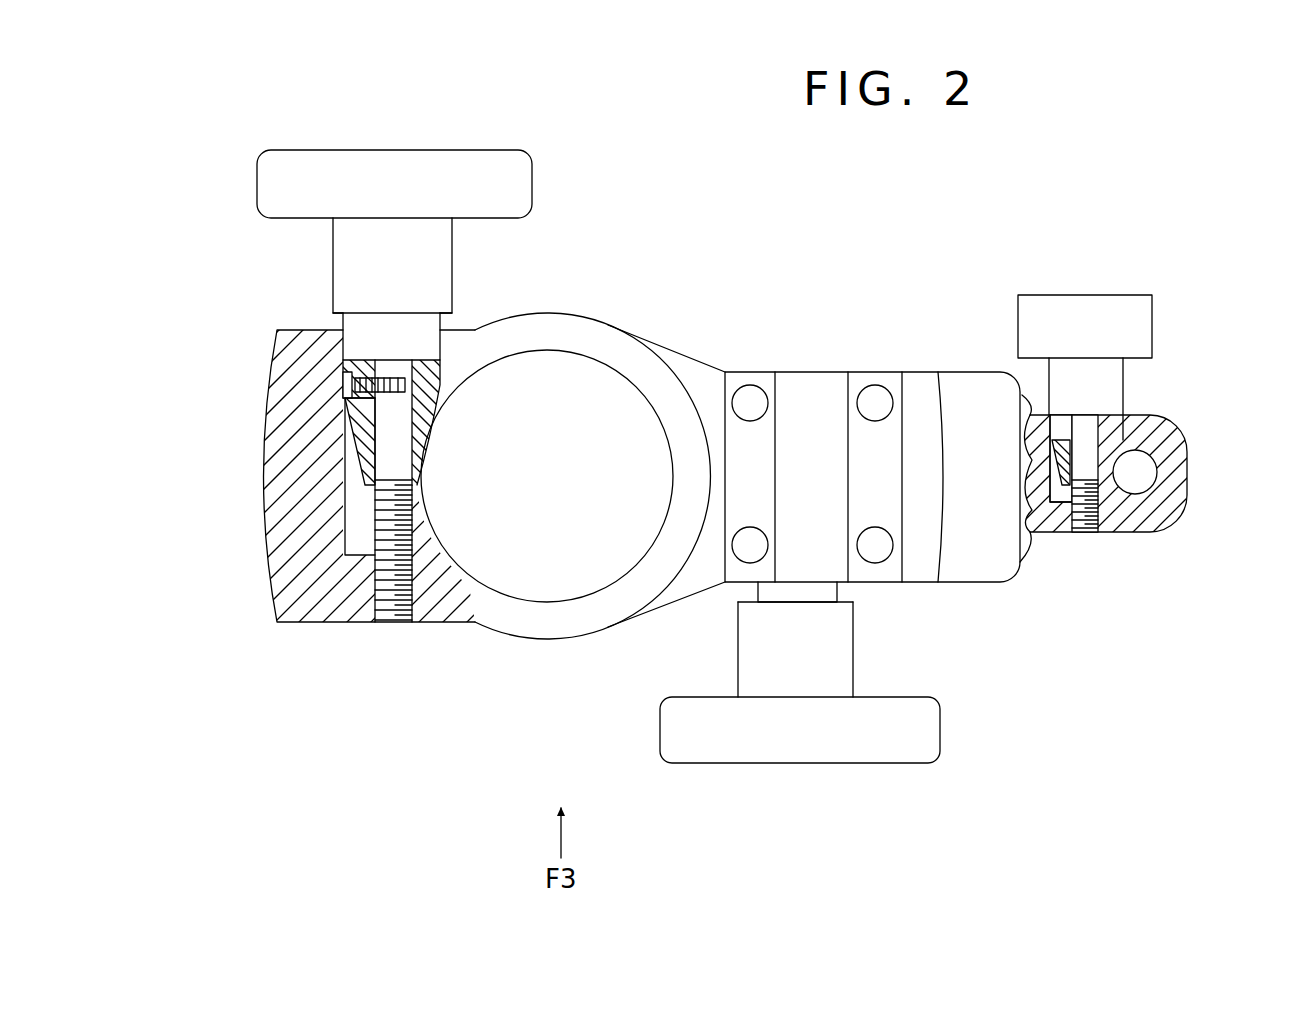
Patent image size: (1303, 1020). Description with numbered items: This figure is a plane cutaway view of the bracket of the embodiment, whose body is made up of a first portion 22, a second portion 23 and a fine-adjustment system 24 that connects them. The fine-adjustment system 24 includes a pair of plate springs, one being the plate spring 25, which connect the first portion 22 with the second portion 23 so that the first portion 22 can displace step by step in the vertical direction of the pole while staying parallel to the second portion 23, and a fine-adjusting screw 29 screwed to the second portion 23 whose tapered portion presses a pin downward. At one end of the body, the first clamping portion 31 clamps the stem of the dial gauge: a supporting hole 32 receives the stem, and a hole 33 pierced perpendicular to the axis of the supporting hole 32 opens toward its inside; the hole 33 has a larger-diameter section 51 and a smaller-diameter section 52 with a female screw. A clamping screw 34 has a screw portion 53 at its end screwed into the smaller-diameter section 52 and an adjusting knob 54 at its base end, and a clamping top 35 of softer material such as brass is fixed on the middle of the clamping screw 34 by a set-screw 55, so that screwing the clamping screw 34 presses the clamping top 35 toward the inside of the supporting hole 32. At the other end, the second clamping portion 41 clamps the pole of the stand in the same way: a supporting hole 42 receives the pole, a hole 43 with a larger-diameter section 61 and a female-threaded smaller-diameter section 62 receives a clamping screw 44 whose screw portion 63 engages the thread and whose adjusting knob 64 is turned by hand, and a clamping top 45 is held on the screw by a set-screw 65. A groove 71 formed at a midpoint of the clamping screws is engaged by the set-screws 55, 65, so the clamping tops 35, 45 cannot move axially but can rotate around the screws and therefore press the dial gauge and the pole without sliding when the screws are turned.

The first portion 22 is at (993, 578).
The second portion 23 is at (278, 622).
The fine-adjustment system 24 is at (872, 282).
The plate spring 25 is at (818, 372).
The fine-adjusting screw 29 is at (843, 660).
The first clamping portion 31 is at (1201, 224).
The supporting hole 32 is at (1188, 488).
The hole 33 is at (1122, 503).
The clamping screw 34 is at (1123, 388).
The clamping top 35 is at (1165, 425).
The second clamping portion 41 is at (630, 114).
The supporting hole 42 is at (603, 376).
The hole 43 is at (350, 526).
The clamping screw 44 is at (452, 270).
The clamping top 45 is at (345, 426).
The larger-diameter section 51 is at (1030, 478).
The smaller-diameter section 52 is at (1045, 530).
The screw portion 53 is at (1083, 532).
The adjusting knob 54 is at (1072, 300).
The set-screw 55 is at (1050, 438).
The larger-diameter section 61 is at (345, 478).
The smaller-diameter section 62 is at (415, 592).
The screw portion 63 is at (388, 618).
The adjusting knob 64 is at (443, 152).
The set-screw 65 is at (343, 388).
The groove 71 is at (393, 378).